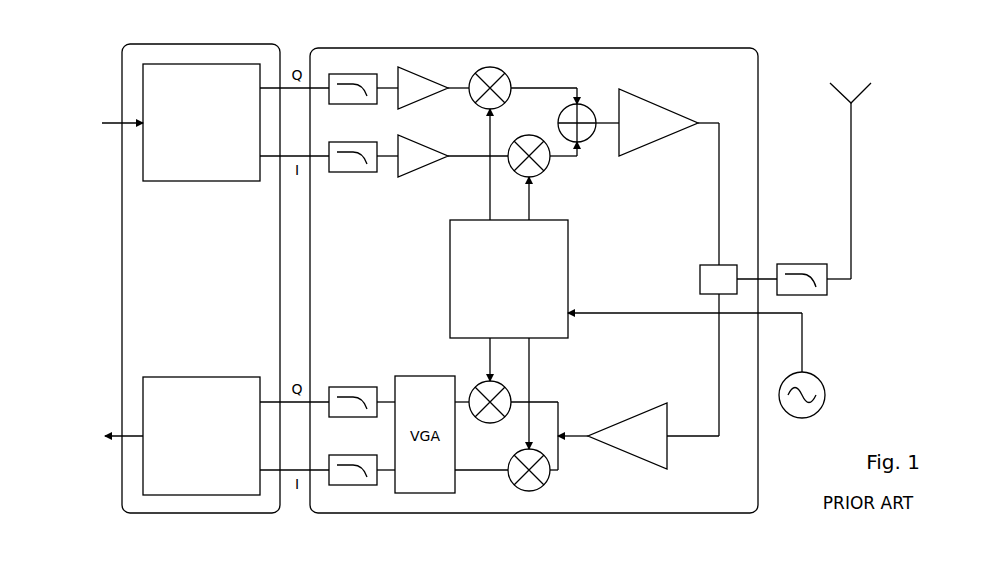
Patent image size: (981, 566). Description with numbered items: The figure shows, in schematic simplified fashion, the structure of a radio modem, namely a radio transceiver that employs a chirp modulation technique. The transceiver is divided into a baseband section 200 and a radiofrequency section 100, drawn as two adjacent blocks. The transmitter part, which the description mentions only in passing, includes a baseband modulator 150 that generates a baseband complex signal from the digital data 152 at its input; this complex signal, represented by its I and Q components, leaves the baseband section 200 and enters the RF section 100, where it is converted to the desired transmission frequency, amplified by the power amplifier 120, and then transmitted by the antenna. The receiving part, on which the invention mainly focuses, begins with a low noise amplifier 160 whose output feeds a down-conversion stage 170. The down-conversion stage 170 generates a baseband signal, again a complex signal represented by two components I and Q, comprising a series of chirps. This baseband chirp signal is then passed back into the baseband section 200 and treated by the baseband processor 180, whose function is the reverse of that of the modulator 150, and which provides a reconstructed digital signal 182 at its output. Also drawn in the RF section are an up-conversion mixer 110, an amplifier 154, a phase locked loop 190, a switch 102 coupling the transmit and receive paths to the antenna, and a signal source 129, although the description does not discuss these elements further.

The radiofrequency section 100 is at (758, 226).
The antenna switch 102 is at (700, 268).
The up-conversion mixer 110 is at (495, 66).
The power amplifier 120 is at (677, 108).
The local oscillator signal source 129 is at (800, 420).
The baseband modulator 150 is at (242, 63).
The digital data 152 is at (80, 108).
The baseband amplifier 154 is at (415, 72).
The low noise amplifier 160 is at (670, 450).
The down-conversion stage 170 is at (520, 490).
The baseband processor 180 is at (240, 497).
The reconstructed digital signal 182 is at (80, 450).
The phase locked loop 190 is at (450, 230).
The baseband section 200 is at (122, 262).